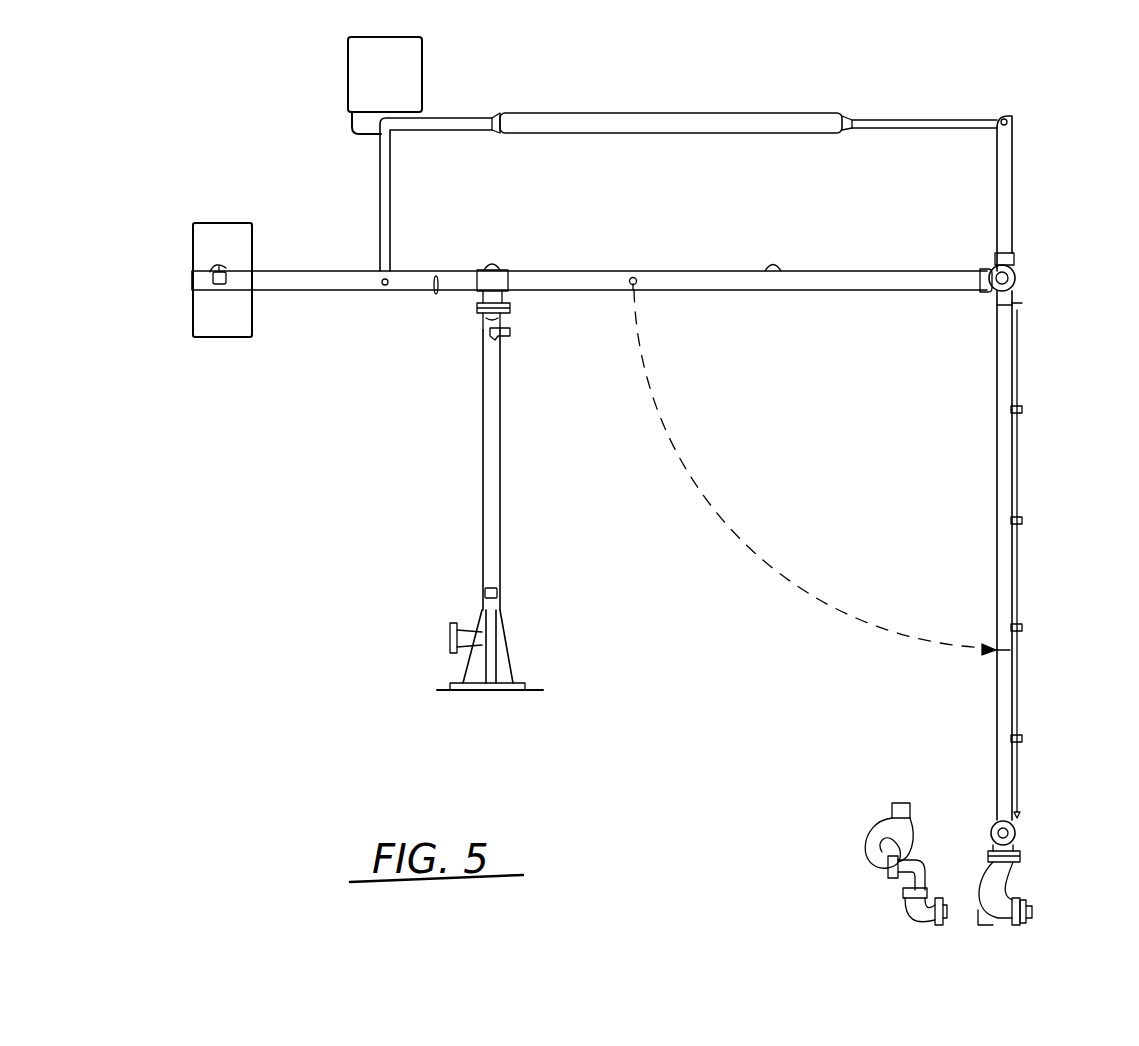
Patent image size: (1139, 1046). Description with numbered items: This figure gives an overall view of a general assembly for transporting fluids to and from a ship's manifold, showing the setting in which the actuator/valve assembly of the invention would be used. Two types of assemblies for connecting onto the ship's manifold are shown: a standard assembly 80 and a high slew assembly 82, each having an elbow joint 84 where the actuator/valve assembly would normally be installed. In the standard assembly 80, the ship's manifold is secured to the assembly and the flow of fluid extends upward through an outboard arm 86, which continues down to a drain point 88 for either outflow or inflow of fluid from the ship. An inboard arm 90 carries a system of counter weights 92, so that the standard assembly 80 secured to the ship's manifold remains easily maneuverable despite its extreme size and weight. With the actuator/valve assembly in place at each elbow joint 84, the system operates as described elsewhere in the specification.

The standard assembly 80 is at (1024, 830).
The high slew assembly 82 is at (878, 795).
The elbow joint 84 is at (915, 825).
The outboard arm 86 is at (1002, 570).
The drain point 88 is at (448, 638).
The inboard arm 90 is at (570, 285).
The counter weights 92 is at (203, 228).